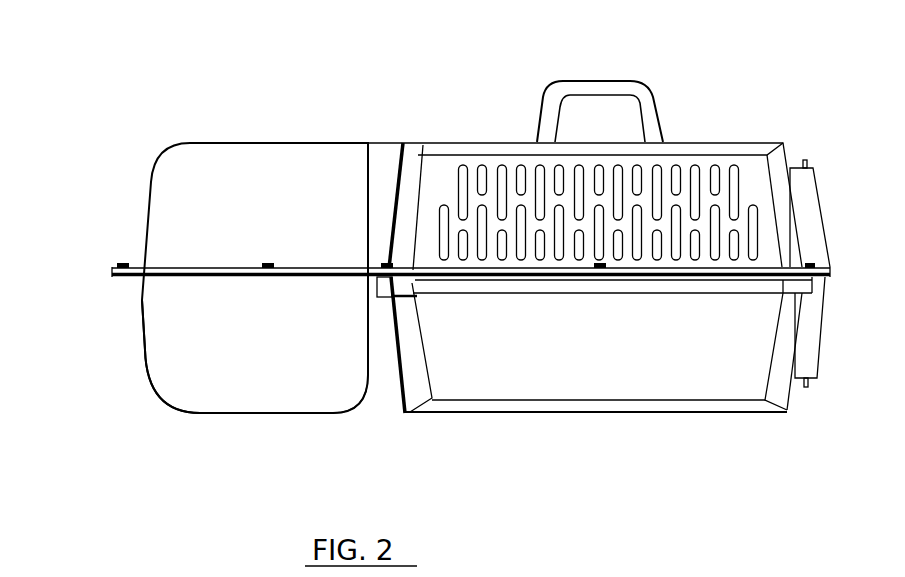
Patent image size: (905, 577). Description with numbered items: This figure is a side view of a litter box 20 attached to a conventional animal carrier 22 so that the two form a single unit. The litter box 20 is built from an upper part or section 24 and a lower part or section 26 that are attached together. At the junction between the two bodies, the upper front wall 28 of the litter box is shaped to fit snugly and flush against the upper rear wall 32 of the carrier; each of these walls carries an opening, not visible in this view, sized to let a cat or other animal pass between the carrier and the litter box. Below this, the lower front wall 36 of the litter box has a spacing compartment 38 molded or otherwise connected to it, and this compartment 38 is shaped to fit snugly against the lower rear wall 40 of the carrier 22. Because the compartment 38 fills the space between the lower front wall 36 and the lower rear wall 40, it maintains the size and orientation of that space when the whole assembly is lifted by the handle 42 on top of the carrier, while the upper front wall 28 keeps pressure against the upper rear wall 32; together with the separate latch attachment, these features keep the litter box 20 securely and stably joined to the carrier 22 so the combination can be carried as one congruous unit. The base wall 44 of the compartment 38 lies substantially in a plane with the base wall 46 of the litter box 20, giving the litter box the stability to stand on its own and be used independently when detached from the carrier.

The litter box 20 is at (300, 94).
The animal carrier 22 is at (609, 240).
The upper part or section 24 is at (206, 266).
The lower part or section 26 is at (142, 348).
The upper front wall 28 is at (371, 185).
The upper rear wall 32 is at (446, 173).
The lower front wall 36 is at (314, 377).
The spacing compartment 38 is at (439, 393).
The lower rear wall 40 is at (480, 377).
The handle 42 is at (648, 78).
The base wall 44 is at (312, 442).
The base wall 46 is at (206, 458).